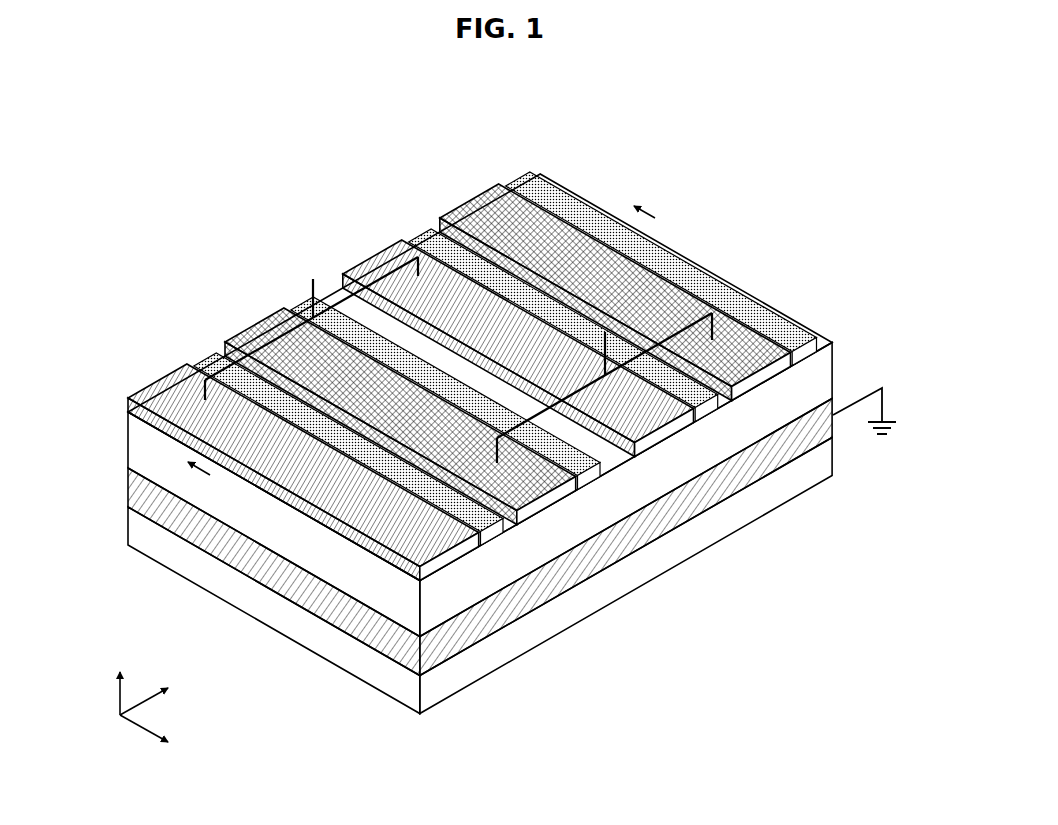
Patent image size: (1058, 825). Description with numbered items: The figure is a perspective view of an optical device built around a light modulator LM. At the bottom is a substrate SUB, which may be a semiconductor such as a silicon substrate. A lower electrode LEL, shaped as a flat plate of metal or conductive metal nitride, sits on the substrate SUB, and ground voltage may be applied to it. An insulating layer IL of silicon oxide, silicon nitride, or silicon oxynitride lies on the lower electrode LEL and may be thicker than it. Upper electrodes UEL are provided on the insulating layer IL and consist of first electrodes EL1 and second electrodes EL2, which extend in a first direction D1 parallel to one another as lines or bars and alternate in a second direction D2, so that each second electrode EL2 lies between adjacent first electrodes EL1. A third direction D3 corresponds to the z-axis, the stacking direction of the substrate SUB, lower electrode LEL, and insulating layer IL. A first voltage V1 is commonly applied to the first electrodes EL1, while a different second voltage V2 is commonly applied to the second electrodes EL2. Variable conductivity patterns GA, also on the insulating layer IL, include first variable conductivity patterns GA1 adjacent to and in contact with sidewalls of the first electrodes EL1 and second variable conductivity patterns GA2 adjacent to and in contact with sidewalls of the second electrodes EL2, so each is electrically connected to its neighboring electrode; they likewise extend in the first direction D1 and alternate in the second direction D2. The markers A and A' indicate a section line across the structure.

The light modulator LM is at (790, 138).
The upper electrodes UEL is at (436, 112).
The first electrodes EL1 is at (157, 400).
The second electrodes EL2 is at (270, 325).
The first voltage V1 is at (311, 322).
The second voltage V2 is at (604, 380).
The insulating layer IL is at (128, 441).
The lower electrode LEL is at (128, 488).
The substrate SUB is at (128, 527).
The variable conductivity patterns GA is at (958, 474).
The first variable conductivity patterns GA1 is at (505, 527).
The second variable conductivity patterns GA2 is at (607, 470).
The section line A is at (208, 477).
The section line A' is at (657, 219).
The first direction D1 is at (163, 738).
The second direction D2 is at (163, 694).
The third direction D3 is at (121, 677).